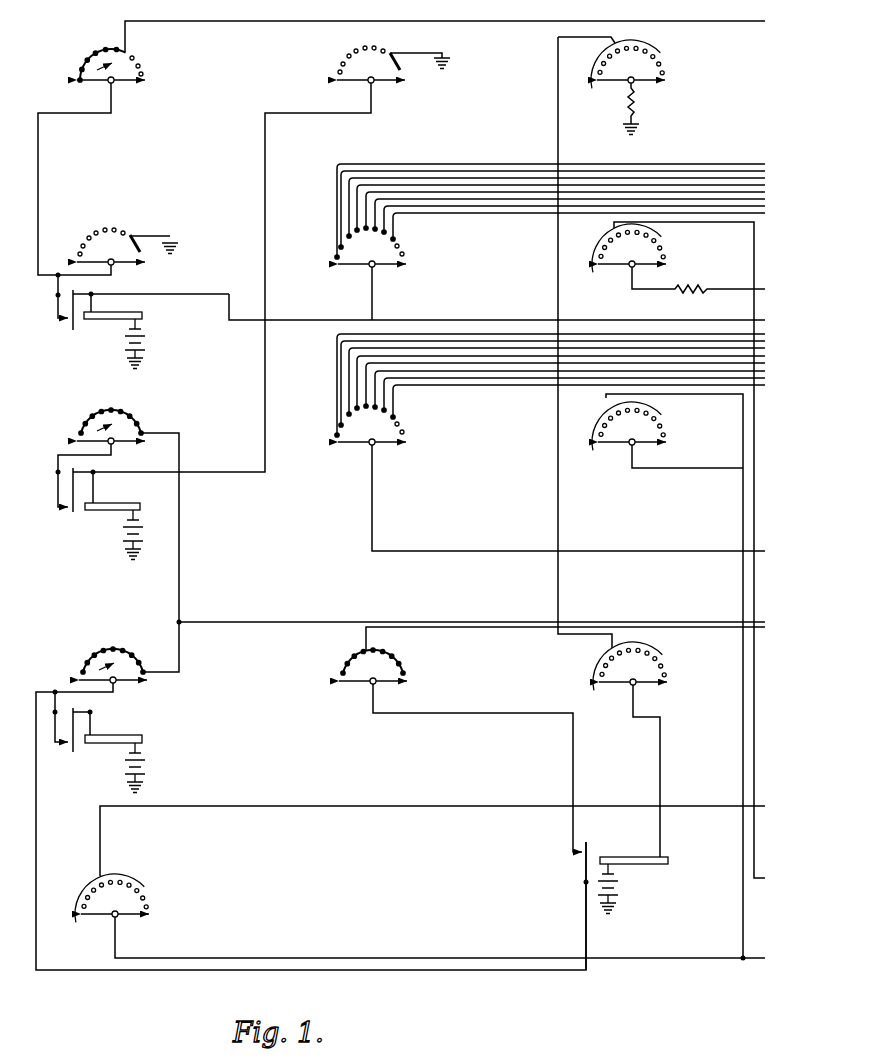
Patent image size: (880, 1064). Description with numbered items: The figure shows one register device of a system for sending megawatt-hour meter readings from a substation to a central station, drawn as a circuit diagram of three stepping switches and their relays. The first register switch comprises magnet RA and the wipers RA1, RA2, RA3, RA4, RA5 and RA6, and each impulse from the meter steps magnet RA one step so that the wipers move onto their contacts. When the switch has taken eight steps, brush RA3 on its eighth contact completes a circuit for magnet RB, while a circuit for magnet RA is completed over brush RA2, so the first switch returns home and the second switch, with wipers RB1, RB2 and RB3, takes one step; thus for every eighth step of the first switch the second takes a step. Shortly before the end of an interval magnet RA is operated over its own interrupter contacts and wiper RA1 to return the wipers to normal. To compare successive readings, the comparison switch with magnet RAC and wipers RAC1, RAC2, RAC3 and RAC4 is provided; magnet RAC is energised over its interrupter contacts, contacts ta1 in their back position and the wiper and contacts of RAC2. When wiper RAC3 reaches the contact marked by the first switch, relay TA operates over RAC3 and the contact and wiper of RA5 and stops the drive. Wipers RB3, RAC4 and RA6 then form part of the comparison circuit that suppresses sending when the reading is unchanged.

The wiper RA1 is at (111, 74).
The brush RA2 is at (127, 256).
The brush RA3 is at (393, 80).
The wiper RA4 is at (370, 256).
The wiper RA5 is at (628, 87).
The wiper RA6 is at (629, 255).
The wiper RB1 is at (111, 435).
The wiper RB2 is at (370, 433).
The wiper RB3 is at (629, 432).
The wiper RAC1 is at (117, 674).
The wiper RAC2 is at (378, 675).
The wiper RAC3 is at (634, 672).
The wiper RAC4 is at (116, 904).
The magnet RA is at (151, 329).
The magnet RB is at (108, 514).
The magnet RAC is at (109, 750).
The relay TA is at (633, 875).
The contacts ta1 is at (565, 906).